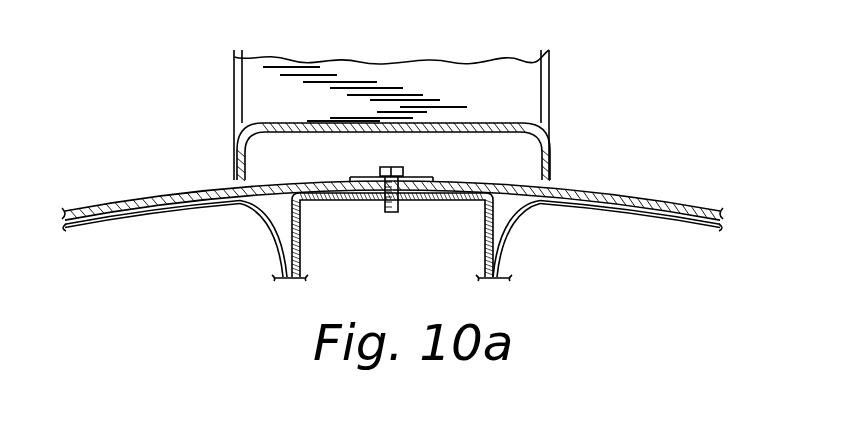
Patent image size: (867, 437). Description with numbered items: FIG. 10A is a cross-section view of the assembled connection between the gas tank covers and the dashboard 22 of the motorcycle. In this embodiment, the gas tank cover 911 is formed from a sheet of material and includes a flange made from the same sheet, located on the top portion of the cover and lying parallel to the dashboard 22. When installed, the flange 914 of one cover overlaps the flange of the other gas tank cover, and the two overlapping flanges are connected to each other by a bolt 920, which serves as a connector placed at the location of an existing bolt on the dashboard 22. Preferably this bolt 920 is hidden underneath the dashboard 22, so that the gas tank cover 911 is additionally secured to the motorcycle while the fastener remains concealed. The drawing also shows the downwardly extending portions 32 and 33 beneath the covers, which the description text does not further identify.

The dashboard 22 is at (451, 73).
The gas tank cover 911 is at (176, 192).
The flange 914 is at (608, 188).
The bolt 920 is at (386, 167).
The left support leg 32 is at (278, 222).
The right support leg 33 is at (548, 200).